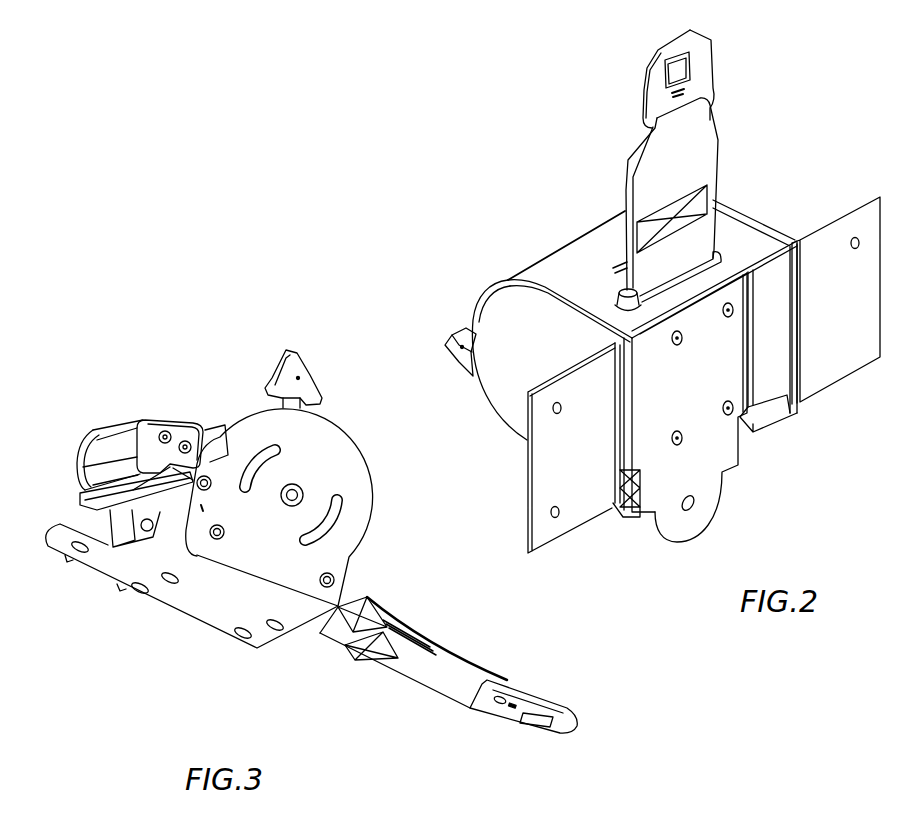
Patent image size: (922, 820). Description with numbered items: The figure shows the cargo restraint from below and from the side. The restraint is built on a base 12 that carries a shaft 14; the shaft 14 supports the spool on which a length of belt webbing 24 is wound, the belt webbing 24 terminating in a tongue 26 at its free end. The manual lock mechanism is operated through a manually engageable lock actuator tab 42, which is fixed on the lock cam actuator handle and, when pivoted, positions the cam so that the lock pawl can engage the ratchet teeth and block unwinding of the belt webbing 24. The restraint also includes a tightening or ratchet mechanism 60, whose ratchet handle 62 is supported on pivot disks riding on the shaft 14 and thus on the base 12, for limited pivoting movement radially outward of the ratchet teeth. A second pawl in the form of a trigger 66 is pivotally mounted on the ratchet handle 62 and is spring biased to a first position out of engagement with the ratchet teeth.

In FIG. 2, the base 12 is at (773, 232).
In FIG. 3, the base 12 is at (215, 625).
In FIG. 3, the shaft 14 is at (298, 490).
In FIG. 2, the belt webbing 24 is at (715, 154).
In FIG. 3, the belt webbing 24 is at (452, 705).
In FIG. 2, the tongue 26 is at (711, 62).
In FIG. 3, the tongue 26 is at (560, 707).
In FIG. 2, the lock actuator tab 42 is at (460, 328).
In FIG. 3, the lock actuator tab 42 is at (308, 365).
In FIG. 3, the ratchet mechanism 60 is at (137, 412).
In FIG. 3, the ratchet handle 62 is at (183, 419).
In FIG. 3, the trigger 66 is at (97, 503).